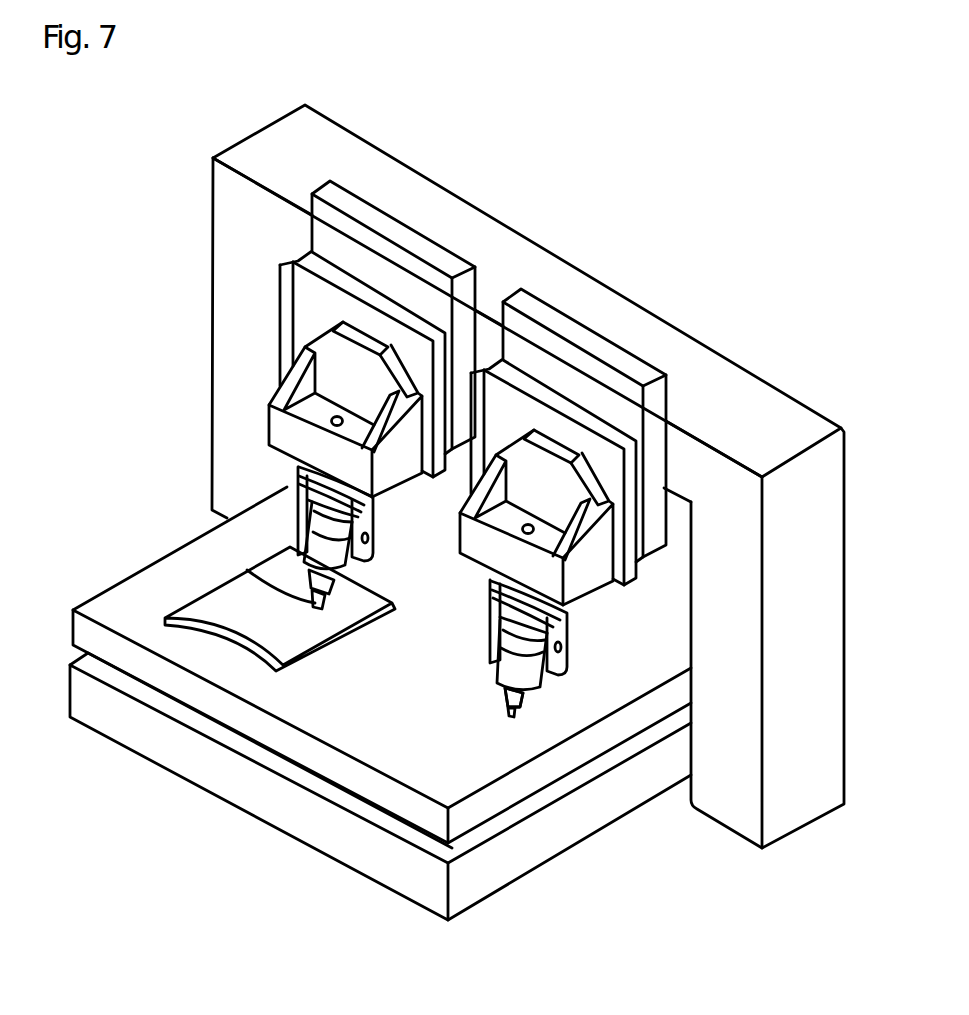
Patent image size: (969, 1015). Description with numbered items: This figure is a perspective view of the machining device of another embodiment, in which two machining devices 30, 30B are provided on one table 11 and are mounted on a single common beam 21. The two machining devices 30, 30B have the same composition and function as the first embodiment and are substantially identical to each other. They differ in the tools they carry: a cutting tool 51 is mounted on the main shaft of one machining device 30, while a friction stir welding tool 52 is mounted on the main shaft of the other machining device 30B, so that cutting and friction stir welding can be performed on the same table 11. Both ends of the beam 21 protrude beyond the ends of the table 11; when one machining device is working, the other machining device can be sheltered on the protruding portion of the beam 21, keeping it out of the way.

The beam 21 is at (588, 310).
The machining device 30 is at (262, 425).
The machining device 30B is at (593, 670).
The table 11 is at (208, 707).
The cutting tool 51 is at (314, 598).
The friction stir welding tool 52 is at (515, 718).